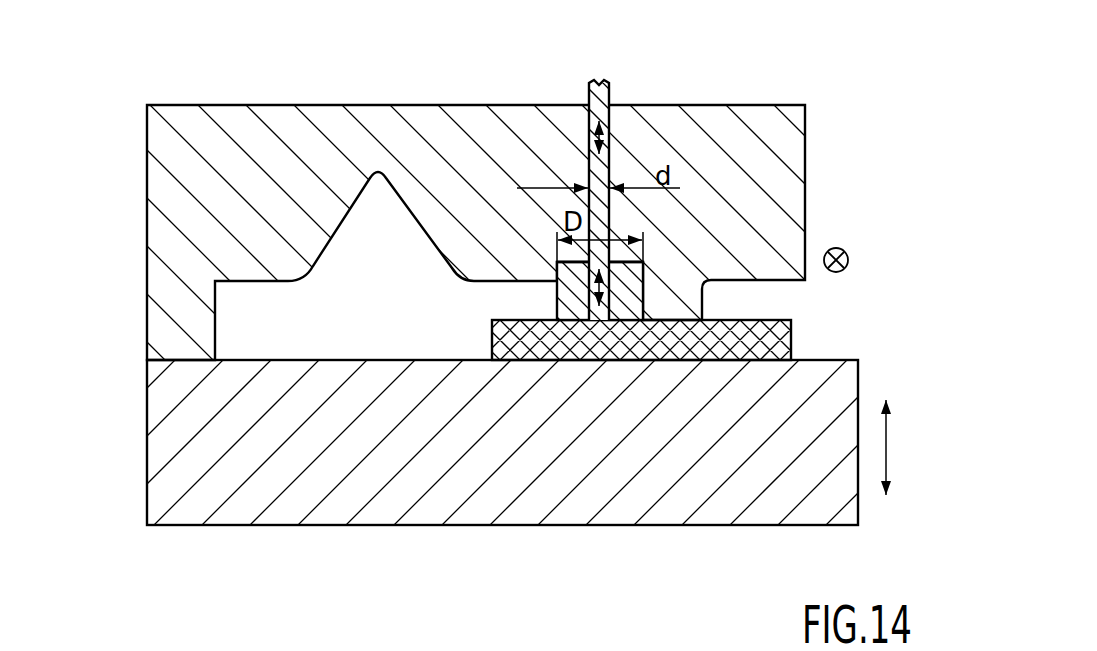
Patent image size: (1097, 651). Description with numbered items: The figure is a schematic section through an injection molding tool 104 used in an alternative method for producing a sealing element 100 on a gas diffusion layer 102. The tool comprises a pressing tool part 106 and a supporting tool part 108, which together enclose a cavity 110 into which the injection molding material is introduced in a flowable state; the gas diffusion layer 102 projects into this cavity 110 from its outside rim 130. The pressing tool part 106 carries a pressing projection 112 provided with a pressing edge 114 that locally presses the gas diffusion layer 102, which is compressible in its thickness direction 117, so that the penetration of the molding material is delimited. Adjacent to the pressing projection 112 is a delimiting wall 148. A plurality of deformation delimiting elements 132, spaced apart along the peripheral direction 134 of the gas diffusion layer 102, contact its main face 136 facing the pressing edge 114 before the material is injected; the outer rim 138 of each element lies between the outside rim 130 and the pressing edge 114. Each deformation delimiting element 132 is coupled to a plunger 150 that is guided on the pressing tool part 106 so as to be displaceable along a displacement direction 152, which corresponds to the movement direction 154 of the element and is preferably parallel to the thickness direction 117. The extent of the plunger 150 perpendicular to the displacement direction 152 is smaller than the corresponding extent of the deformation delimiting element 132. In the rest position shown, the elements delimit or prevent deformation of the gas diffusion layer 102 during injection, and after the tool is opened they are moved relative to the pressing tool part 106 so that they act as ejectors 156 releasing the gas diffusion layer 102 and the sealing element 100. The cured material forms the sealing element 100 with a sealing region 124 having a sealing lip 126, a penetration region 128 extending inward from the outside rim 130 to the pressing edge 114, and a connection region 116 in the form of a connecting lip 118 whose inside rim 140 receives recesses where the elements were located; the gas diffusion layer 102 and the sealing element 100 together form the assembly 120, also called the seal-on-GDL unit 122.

The sealing element 100 is at (293, 272).
The gas diffusion layer 102 is at (762, 338).
The injection molding tool 104 is at (183, 103).
The pressing tool part 106 is at (806, 142).
The supporting tool part 108 is at (830, 516).
The cavity 110 is at (395, 317).
The pressing projection 112 is at (680, 313).
The pressing edge 114 is at (643, 320).
The connection region 116 is at (478, 277).
The thickness direction 117 is at (886, 447).
The connecting lip 118 is at (510, 277).
The assembly 120 is at (385, 364).
The seal-on-GDL unit 122 is at (252, 363).
The sealing region 124 is at (213, 322).
The sealing lip 126 is at (378, 166).
The penetration region 128 is at (540, 366).
The outside rim 130 is at (491, 337).
The deformation delimiting element 132 is at (645, 265).
The peripheral direction 134 is at (848, 260).
The main face 136 is at (583, 312).
The outer rim 138 is at (557, 312).
The inside rim 140 is at (593, 308).
The delimiting wall 148 is at (555, 277).
The plunger 150 is at (597, 172).
The displacement direction 152 is at (610, 135).
The movement direction 154 is at (630, 270).
The ejector 156 is at (620, 306).